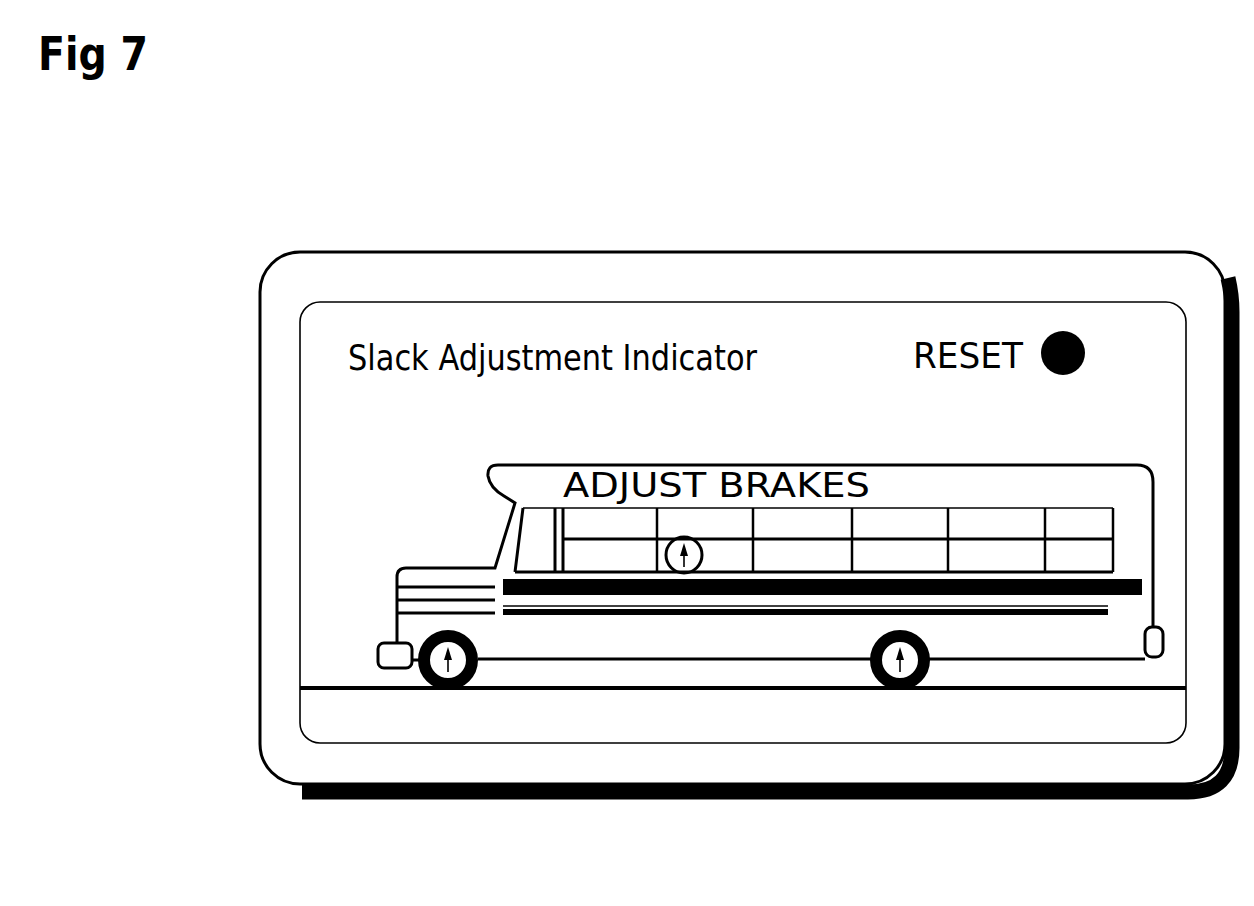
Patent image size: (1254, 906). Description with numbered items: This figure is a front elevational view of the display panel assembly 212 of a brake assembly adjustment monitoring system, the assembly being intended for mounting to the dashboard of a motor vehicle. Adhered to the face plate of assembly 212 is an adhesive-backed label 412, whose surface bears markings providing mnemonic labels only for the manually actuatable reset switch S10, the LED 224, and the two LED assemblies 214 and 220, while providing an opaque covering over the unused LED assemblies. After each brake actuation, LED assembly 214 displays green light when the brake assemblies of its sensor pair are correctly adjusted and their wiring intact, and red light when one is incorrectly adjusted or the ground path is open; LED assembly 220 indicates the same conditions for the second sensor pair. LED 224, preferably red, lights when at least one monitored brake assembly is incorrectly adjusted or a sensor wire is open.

The display panel assembly 212 is at (806, 245).
The reset switch S10 is at (1062, 322).
The LED assembly 214 is at (448, 690).
The LED 224 is at (684, 573).
The LED assembly 220 is at (900, 690).
The adhesive label 412 is at (1095, 750).